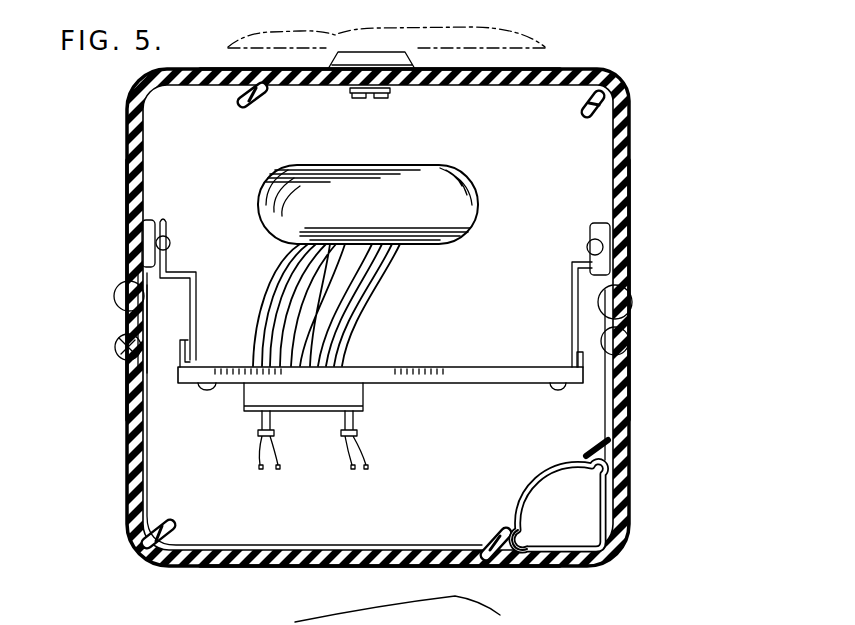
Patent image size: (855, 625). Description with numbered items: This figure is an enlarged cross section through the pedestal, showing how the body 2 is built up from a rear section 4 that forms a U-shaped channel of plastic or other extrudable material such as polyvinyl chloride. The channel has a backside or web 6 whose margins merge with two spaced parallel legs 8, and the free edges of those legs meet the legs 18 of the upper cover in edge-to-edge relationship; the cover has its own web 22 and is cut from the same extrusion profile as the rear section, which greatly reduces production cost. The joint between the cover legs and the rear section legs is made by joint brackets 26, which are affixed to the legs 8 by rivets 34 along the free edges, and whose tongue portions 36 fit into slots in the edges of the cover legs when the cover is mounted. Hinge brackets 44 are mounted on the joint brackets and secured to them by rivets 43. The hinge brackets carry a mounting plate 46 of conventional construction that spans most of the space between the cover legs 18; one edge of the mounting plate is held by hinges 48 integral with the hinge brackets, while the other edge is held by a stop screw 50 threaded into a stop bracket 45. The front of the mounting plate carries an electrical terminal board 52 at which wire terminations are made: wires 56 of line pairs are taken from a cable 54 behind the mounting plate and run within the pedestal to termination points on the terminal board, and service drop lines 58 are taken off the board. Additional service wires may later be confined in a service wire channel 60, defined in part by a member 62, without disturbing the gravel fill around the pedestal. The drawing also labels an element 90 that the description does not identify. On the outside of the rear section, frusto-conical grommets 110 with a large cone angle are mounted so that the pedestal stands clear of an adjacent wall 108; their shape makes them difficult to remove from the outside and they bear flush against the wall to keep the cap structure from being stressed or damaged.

The body 2 is at (427, 320).
The rear section 4 is at (628, 150).
The web 6 is at (548, 76).
The legs 8 is at (127, 163).
The legs 18 is at (130, 482).
The web 22 is at (313, 574).
The joint brackets 26 is at (152, 218).
The rivets 34 is at (114, 296).
The tongue portions 36 is at (116, 352).
The rivets 43 is at (171, 244).
The hinge brackets 44 is at (572, 300).
The stop bracket 45 is at (190, 276).
The mounting plate 46 is at (378, 372).
The hinges 48 is at (556, 388).
The stop screw 50 is at (207, 392).
The electrical terminal board 52 is at (302, 391).
The cable 54 is at (356, 185).
The wires 56 is at (378, 278).
The service drop lines 58 is at (258, 470).
The service wire channel 60 is at (590, 508).
The member 62 is at (516, 522).
The fastener 90 is at (114, 338).
The wall 108 is at (470, 32).
The grommets 110 is at (356, 52).